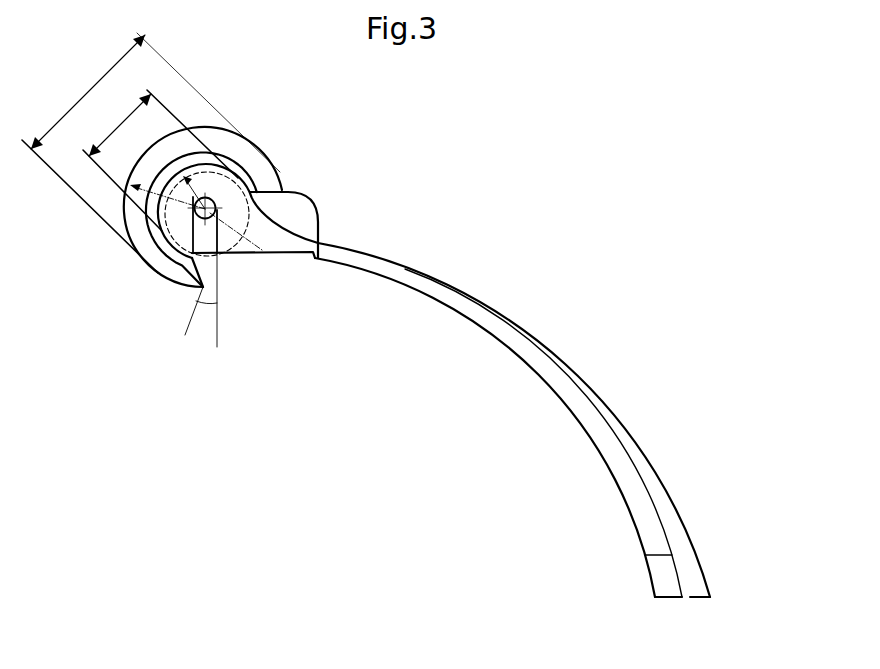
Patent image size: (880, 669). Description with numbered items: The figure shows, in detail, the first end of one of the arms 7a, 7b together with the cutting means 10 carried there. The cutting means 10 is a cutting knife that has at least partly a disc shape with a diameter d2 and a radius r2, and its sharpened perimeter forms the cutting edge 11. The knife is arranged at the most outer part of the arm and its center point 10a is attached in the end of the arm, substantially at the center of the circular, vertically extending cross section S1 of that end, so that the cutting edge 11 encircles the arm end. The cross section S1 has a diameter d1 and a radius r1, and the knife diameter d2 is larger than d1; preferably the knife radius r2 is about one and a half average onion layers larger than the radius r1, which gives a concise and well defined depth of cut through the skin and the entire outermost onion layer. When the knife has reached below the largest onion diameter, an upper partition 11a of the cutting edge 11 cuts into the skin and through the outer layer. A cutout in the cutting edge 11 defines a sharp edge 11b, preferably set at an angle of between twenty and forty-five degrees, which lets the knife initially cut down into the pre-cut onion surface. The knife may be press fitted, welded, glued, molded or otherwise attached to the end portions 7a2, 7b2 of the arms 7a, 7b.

The cutting means 10 is at (201, 204).
The center point 10a is at (256, 254).
The cutting edge 11 is at (201, 204).
The upper partition 11a is at (201, 129).
The sharp edge 11b is at (200, 290).
The vertically extending cross section S1 is at (228, 191).
The radius r1 is at (216, 163).
The knife radius r2 is at (150, 192).
The diameter d1 is at (160, 160).
The diameter d2 is at (151, 153).
The arm 7a is at (566, 420).
The arm 7b is at (566, 420).
The first end 7a2 is at (731, 569).
The first end 7b2 is at (692, 592).